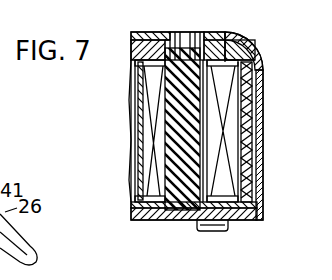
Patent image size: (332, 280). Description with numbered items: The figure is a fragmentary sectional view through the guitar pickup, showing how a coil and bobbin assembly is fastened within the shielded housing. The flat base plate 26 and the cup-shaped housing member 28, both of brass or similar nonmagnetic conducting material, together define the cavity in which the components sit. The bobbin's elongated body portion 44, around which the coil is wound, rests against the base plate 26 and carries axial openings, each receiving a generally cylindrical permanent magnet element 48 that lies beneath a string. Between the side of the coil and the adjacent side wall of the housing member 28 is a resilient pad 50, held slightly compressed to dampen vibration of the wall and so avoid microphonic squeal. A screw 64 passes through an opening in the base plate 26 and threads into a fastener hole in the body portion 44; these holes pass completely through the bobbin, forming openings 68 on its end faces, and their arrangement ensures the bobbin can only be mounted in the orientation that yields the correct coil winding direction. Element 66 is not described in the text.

The base plate 26 is at (141, 220).
The housing member 28 is at (256, 176).
The body portion 44 is at (187, 192).
The permanent magnet element 48 is at (192, 45).
The pad 50 is at (244, 136).
The screw 64 is at (222, 231).
The spring 66 is at (210, 102).
The opening 68 is at (233, 38).